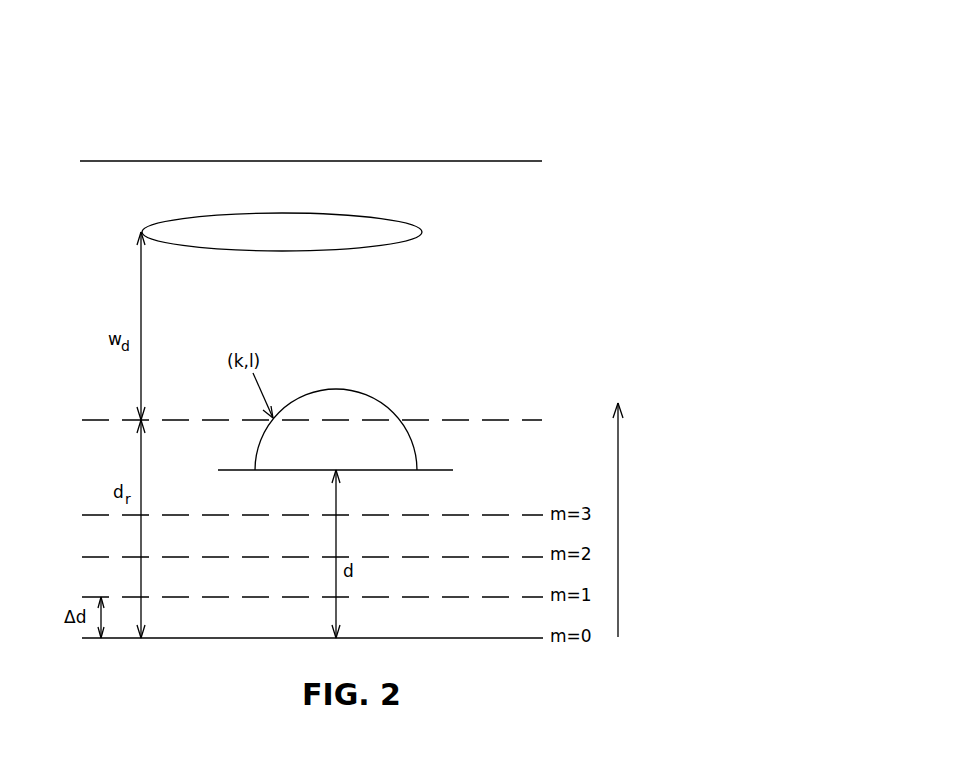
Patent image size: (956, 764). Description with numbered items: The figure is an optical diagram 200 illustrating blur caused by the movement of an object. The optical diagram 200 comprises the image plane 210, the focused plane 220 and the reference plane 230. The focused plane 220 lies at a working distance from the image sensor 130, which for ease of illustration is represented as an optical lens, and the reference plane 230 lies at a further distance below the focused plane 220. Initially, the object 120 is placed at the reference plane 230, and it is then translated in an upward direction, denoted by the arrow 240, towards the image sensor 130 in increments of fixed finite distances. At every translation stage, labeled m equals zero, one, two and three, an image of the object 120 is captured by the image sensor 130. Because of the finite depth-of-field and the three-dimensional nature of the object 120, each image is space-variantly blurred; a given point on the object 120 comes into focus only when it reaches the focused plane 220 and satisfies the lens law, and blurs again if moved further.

The optical diagram 200 is at (571, 107).
The image plane 210 is at (448, 161).
The image sensor 130 is at (422, 231).
The object 120 is at (355, 428).
The focused plane 220 is at (522, 420).
The reference plane 230 is at (488, 638).
The upward translation direction 240 is at (618, 512).